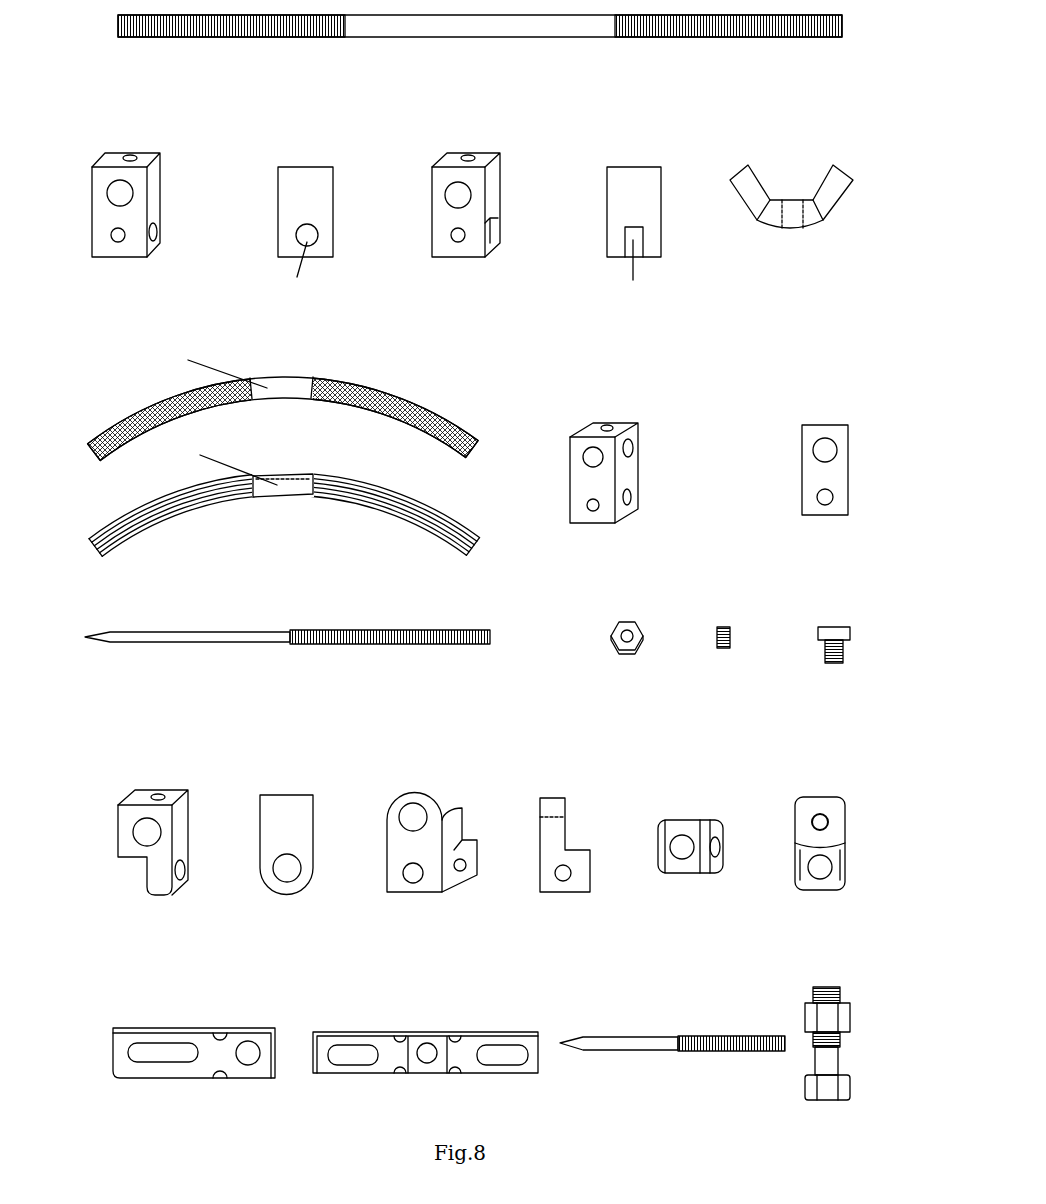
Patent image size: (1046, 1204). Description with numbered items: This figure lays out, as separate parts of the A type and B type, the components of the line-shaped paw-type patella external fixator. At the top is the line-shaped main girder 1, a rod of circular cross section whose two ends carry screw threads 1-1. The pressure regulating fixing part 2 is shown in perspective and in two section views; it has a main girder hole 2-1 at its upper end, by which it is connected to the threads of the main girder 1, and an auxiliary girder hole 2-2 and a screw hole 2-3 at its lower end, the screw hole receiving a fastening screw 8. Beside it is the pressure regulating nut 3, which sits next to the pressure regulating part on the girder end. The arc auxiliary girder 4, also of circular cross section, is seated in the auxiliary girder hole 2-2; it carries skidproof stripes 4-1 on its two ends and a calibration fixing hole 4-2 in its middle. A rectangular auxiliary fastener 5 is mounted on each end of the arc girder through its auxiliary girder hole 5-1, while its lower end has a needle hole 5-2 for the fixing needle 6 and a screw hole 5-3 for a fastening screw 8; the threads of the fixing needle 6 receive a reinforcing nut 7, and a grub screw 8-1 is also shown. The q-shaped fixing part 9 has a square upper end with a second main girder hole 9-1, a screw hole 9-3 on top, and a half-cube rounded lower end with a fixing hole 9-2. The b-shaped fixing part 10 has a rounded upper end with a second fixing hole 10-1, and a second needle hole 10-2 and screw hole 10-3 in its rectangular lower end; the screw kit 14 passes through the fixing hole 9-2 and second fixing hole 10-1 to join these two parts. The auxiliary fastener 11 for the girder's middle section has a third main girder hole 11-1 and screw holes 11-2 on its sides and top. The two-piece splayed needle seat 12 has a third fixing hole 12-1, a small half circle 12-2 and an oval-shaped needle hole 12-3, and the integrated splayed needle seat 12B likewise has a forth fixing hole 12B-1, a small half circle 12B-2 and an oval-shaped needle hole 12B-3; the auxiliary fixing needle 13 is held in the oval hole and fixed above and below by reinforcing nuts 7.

The line-shaped main girder 1 is at (440, 22).
The screw threads 1-1 is at (688, 25).
The pressure regulating fixing part 2 is at (105, 243).
The main girder hole 2-1 is at (125, 190).
The auxiliary girder hole 2-2 is at (156, 228).
The screw hole 2-3 is at (135, 157).
The pressure regulating nut 3 is at (790, 215).
The arc auxiliary girder 4 is at (282, 495).
The skidproof stripe 4-1 is at (383, 412).
The calibration fixing hole 4-2 is at (282, 478).
The auxiliary fastener 5 is at (583, 510).
The auxiliary girder hole 5-1 is at (630, 450).
The needle hole 5-2 is at (602, 510).
The screw hole 5-3 is at (588, 448).
The fixing needle 6 is at (272, 637).
The reinforcing nut 7 is at (622, 653).
The fastening screw 8 is at (723, 652).
The grub screw 8-1 is at (833, 665).
The q-shaped fixing part 9 is at (155, 858).
The second main girder hole 9-1 is at (145, 830).
The fixing hole 9-2 is at (277, 870).
The screw hole 9-3 is at (162, 795).
The b-shaped fixing part 10 is at (397, 858).
The second fixing hole 10-1 is at (418, 810).
The second needle hole 10-2 is at (462, 868).
The screw hole 10-3 is at (418, 880).
The auxiliary fastener 11 is at (672, 858).
The third main girder hole 11-1 is at (678, 843).
The screw hole 11-2 is at (818, 822).
The splayed needle seat 12 is at (208, 1057).
The third fixing hole 12-1 is at (248, 1053).
The small half circle 12-2 is at (220, 1035).
The oval-shaped needle hole 12-3 is at (143, 1053).
The integrated splayed needle seat 12B is at (442, 1062).
The forth fixing hole 12B-1 is at (427, 1053).
The small half circle 12B-2 is at (457, 1040).
The oval-shaped needle hole 12B-3 is at (343, 1052).
The auxiliary fixing needle 13 is at (657, 1050).
The screw kit 14 is at (832, 1045).